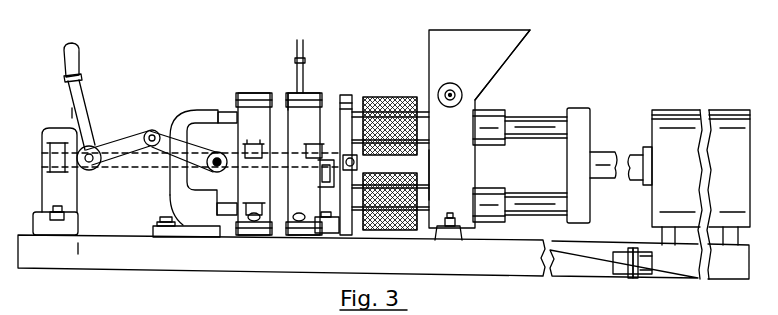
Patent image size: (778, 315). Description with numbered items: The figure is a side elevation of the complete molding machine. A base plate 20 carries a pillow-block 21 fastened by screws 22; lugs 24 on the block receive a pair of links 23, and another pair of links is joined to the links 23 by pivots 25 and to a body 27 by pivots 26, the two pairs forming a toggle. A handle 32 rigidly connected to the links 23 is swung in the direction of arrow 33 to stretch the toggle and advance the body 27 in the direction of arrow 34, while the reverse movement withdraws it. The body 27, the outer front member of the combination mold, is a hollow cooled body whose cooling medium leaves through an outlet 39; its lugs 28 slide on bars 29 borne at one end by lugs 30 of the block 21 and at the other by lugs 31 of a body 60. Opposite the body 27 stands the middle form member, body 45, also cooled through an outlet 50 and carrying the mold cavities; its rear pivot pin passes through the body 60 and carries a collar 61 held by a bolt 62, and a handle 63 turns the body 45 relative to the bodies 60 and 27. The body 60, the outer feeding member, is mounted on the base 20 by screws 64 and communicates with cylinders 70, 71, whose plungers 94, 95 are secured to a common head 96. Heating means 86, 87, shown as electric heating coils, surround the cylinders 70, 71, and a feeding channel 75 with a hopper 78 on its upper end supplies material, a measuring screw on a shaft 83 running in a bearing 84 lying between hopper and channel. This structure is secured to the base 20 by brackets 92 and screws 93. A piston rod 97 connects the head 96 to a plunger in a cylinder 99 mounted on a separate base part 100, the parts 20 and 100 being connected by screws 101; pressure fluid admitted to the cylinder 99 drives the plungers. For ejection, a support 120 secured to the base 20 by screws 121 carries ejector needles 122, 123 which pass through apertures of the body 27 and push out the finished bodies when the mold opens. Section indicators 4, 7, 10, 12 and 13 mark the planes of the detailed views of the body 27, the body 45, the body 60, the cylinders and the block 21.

The section line 4- 4 is at (272, 72).
The section line 7- 7 is at (292, 75).
The section line 10-10 / shaft 10 is at (313, 73).
The frame 12 is at (452, 30).
The section line 13- 13 is at (71, 110).
The base plate 20 is at (120, 272).
The pillow-block 21 is at (42, 189).
The screws 22 is at (65, 213).
The links 23 is at (103, 148).
The lugs 24 is at (85, 170).
The pivots 25 is at (151, 130).
The pivots 26 is at (212, 168).
The body 27 is at (246, 93).
The lugs 28 is at (262, 150).
The bars 29 is at (145, 164).
The lugs 30 is at (48, 150).
The lugs 31 is at (318, 150).
The handle 32 is at (88, 95).
The arrow 33 is at (85, 82).
The arrow 34 is at (265, 189).
The outlet 39 is at (252, 222).
The body 45 is at (289, 95).
The outlet 50 is at (294, 220).
The body 60 is at (344, 96).
The collar 61 is at (337, 183).
The bolt 62 is at (357, 163).
The handle 63 is at (307, 90).
The screws 64 is at (333, 234).
The cylinder 70 is at (494, 110).
The cylinder 71 is at (506, 218).
The feeding channel 75 is at (443, 175).
The hopper 78 is at (516, 50).
The shaft 83 is at (450, 105).
The bearing 84 is at (456, 88).
The heating means 86 is at (393, 97).
The heating means 87 is at (385, 231).
The brackets 92 is at (447, 240).
The screws 93 is at (452, 214).
The plunger 94 is at (537, 117).
The plunger 95 is at (526, 193).
The head 96 is at (585, 108).
The piston rod 97 is at (618, 155).
The cylinder 99 is at (688, 110).
The separate part of the base 100 is at (724, 278).
The screws 101 is at (650, 277).
The support 120 is at (172, 200).
The screws 121 is at (157, 222).
The ejector needle 122 is at (224, 112).
The ejector needle 123 is at (226, 203).